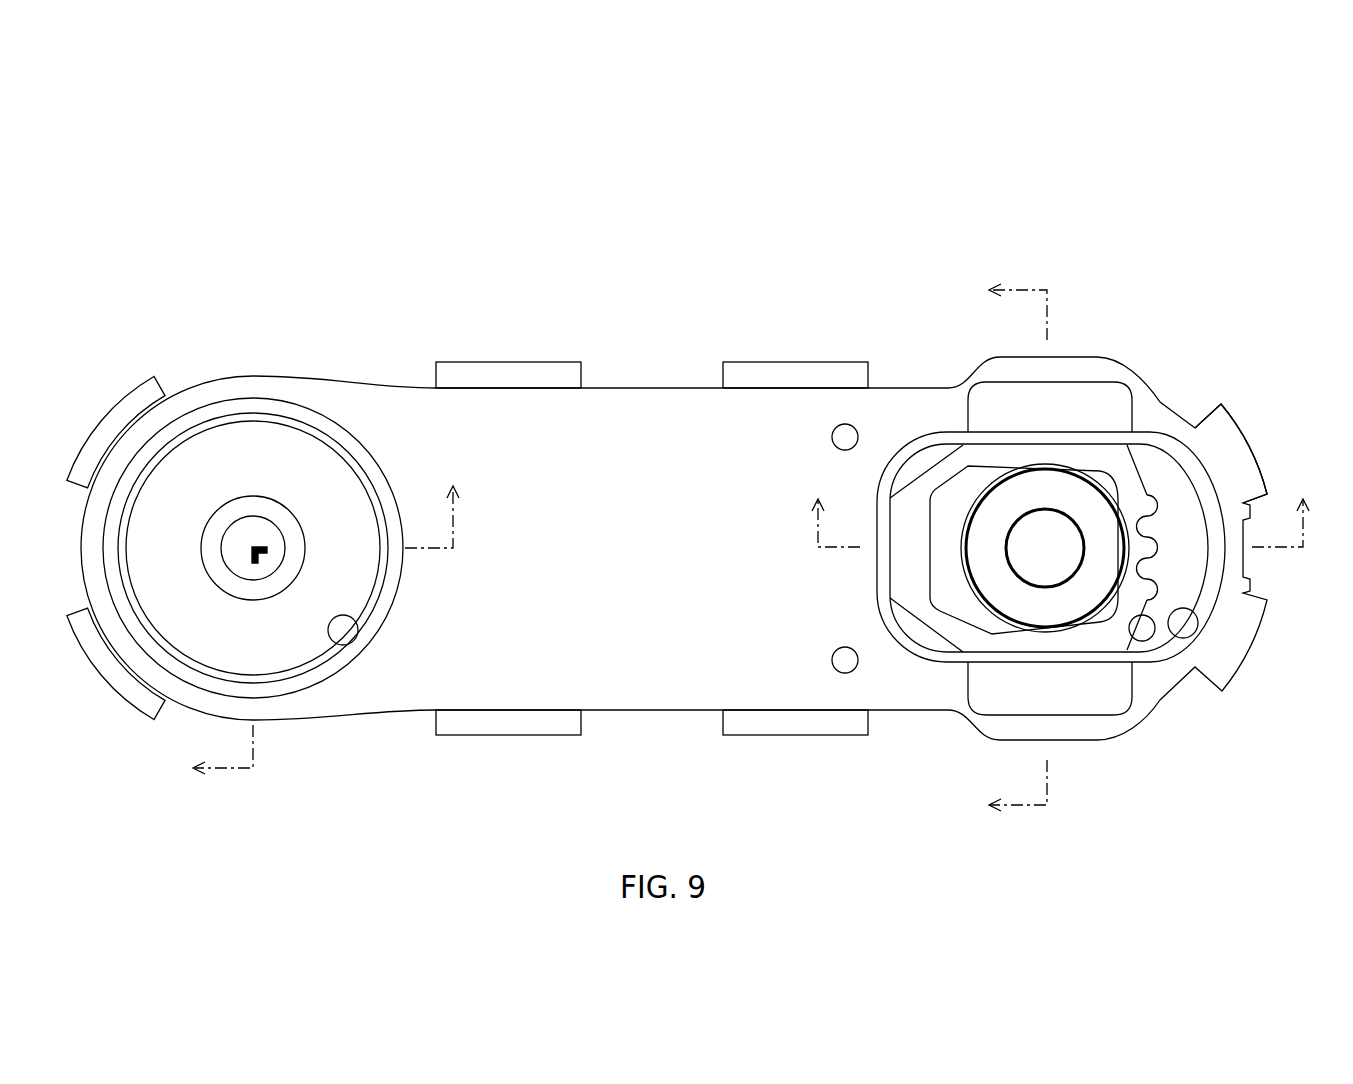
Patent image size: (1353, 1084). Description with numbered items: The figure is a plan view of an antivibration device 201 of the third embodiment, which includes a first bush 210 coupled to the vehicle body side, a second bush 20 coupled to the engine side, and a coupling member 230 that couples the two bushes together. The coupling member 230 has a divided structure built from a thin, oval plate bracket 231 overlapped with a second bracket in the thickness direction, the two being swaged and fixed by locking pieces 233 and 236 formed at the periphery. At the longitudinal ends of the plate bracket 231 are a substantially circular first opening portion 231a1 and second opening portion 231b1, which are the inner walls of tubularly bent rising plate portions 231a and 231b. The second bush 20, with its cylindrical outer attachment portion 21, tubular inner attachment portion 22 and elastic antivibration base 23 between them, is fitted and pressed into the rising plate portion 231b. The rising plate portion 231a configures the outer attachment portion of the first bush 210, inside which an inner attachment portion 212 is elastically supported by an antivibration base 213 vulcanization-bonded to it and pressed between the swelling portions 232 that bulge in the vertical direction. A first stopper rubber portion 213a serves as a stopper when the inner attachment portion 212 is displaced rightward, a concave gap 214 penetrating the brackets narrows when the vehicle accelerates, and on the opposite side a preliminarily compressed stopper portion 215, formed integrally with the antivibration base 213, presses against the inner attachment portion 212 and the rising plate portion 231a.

The second bush 20 is at (352, 365).
The outer attachment portion 21 is at (165, 455).
The inner attachment portion 22 is at (260, 508).
The antivibration base 23 is at (343, 477).
The antivibration device 201 is at (1182, 166).
The first bush 210 is at (1189, 340).
The inner attachment portion 212 is at (1090, 507).
The antivibration base 213 is at (1028, 453).
The first stopper rubber portion 213a is at (1147, 533).
The gap 214 is at (1130, 642).
The stopper portion 215 is at (903, 558).
The coupling member 230 is at (700, 342).
The plate bracket 231 is at (623, 403).
The rising plate portion 231a is at (1212, 607).
The first opening portion 231a1 is at (1182, 642).
The rising plate portion 231b is at (385, 597).
The second opening portion 231b1 is at (353, 623).
The swelling portion 232 is at (1087, 397).
The locking piece 233 is at (1238, 443).
The locking piece 236 is at (510, 722).